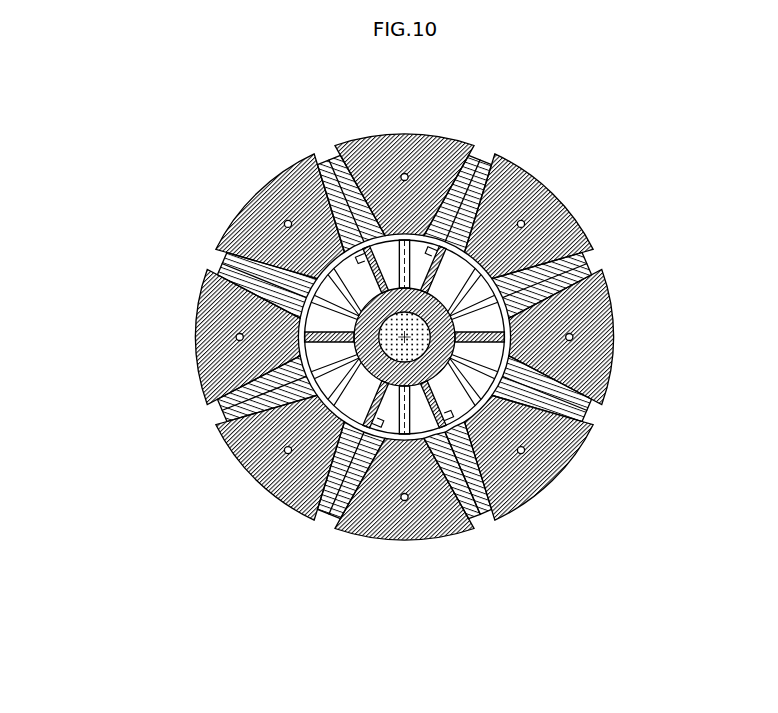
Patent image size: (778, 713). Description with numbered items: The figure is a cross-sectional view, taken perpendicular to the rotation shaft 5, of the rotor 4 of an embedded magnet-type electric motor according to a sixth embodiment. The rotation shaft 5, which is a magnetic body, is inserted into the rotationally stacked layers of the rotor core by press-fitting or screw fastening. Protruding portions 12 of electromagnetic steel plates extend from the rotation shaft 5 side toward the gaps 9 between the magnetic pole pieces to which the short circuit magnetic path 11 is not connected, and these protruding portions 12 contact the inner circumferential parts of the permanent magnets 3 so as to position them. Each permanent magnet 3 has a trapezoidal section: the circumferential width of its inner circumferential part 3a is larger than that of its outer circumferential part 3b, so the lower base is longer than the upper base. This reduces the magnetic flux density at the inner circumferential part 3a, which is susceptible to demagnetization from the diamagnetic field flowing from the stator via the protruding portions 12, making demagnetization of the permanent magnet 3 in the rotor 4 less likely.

The rotor 4 is at (38, 74).
The permanent magnet 3 is at (407, 358).
The inner circumferential part of the permanent magnet 3a is at (452, 507).
The outer circumferential part of the permanent magnet 3b is at (488, 494).
The rotation shaft 5 is at (554, 216).
The gap between magnetic pole pieces 9 is at (258, 457).
The short circuit magnetic path 11 is at (488, 273).
The protruding portion 12 is at (331, 204).